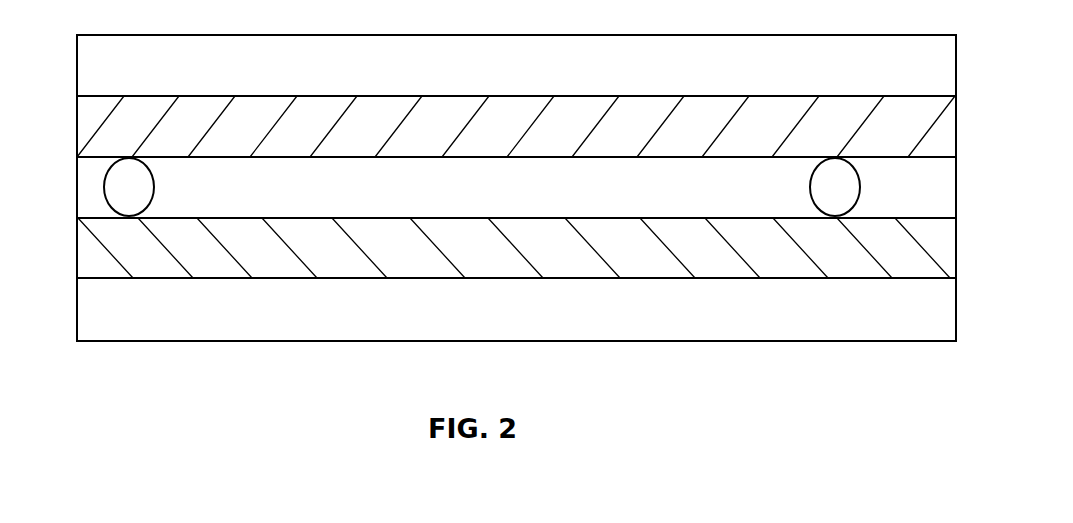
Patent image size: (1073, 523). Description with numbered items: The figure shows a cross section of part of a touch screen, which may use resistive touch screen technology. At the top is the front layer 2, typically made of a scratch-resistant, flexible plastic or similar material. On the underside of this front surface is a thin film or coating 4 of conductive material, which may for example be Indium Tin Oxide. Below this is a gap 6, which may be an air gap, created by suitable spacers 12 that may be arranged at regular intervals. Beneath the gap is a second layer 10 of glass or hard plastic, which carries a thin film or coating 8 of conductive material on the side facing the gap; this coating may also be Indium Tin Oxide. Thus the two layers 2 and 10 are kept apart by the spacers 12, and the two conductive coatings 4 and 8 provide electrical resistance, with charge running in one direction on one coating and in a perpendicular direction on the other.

The front layer 2 is at (932, 68).
The film of conductive material 4 is at (938, 142).
The gap 6 is at (940, 191).
The coating of conductive material 8 is at (940, 250).
The second layer 10 is at (940, 313).
The spacers 12 is at (103, 187).